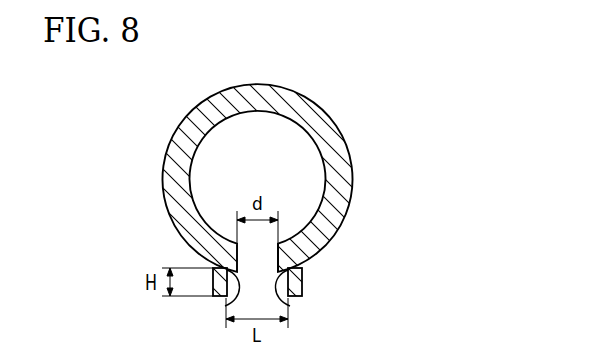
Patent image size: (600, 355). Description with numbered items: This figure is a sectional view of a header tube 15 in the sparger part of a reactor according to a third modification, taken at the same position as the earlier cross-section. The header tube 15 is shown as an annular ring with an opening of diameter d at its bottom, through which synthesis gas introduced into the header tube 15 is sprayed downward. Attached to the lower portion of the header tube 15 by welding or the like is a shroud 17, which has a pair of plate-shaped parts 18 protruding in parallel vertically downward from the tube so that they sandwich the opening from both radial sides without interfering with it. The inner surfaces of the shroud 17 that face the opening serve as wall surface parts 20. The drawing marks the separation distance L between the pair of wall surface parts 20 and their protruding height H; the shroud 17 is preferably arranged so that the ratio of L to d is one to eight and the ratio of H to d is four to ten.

The header tube 15 is at (338, 151).
The plate-shaped part 18 is at (296, 277).
The shroud 17 is at (362, 252).
The wall surface part 20 is at (224, 306).